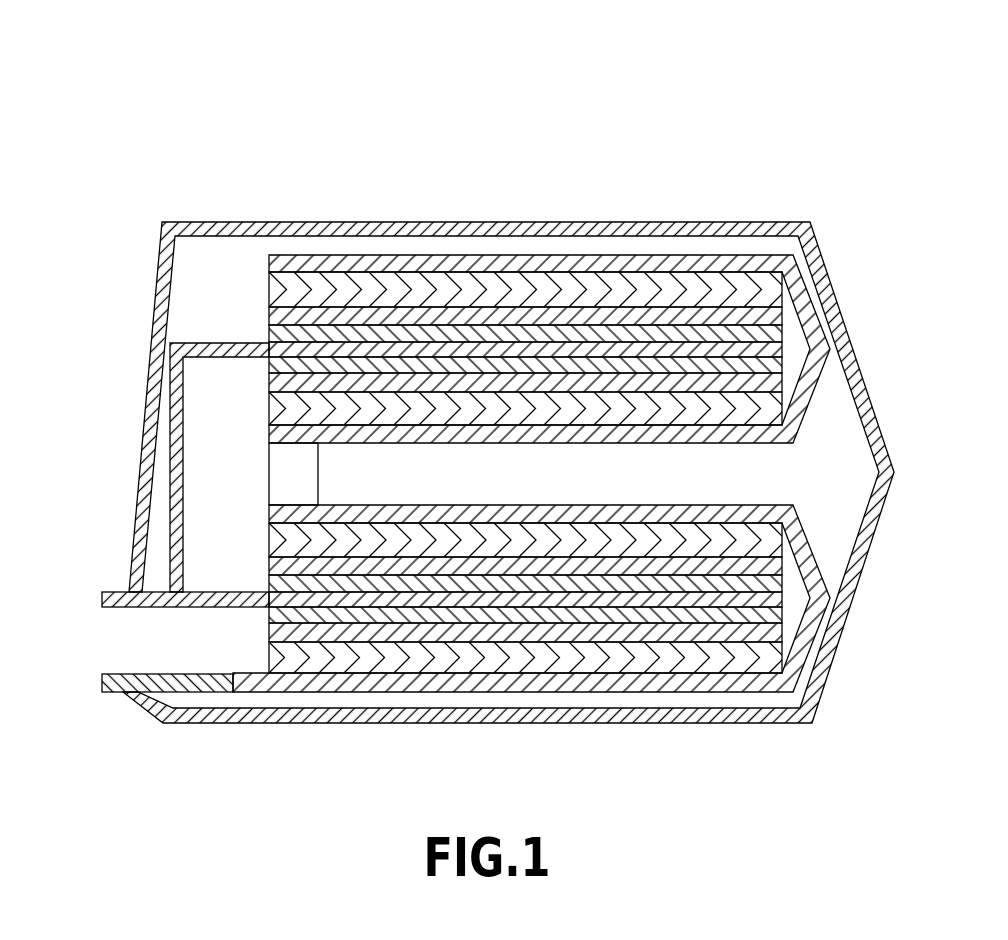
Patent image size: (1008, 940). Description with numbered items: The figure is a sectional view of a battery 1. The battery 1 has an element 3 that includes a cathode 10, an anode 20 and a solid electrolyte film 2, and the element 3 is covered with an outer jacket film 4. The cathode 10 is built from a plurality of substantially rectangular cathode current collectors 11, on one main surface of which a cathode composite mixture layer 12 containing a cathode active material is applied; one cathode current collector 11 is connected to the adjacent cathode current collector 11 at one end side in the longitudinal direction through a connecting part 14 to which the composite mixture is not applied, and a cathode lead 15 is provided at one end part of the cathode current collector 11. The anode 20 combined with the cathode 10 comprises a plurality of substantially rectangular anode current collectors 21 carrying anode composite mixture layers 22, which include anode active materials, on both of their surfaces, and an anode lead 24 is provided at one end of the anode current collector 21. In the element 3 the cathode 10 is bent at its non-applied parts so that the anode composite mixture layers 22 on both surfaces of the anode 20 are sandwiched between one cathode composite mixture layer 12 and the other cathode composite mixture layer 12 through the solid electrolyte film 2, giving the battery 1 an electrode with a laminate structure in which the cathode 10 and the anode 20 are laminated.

The battery 1 is at (770, 104).
The solid electrolyte film 2 is at (663, 313).
The element 3 is at (680, 112).
The outer jacket film 4 is at (740, 222).
The cathode 10 is at (333, 165).
The cathode current collector 11 is at (352, 258).
The cathode composite mixture layer 12 is at (438, 287).
The connecting part 14 is at (277, 472).
The cathode lead 15 is at (187, 687).
The anode 20 is at (625, 165).
The anode current collector 21 is at (503, 340).
The anode composite mixture layer 22 is at (587, 330).
The anode lead 24 is at (112, 592).